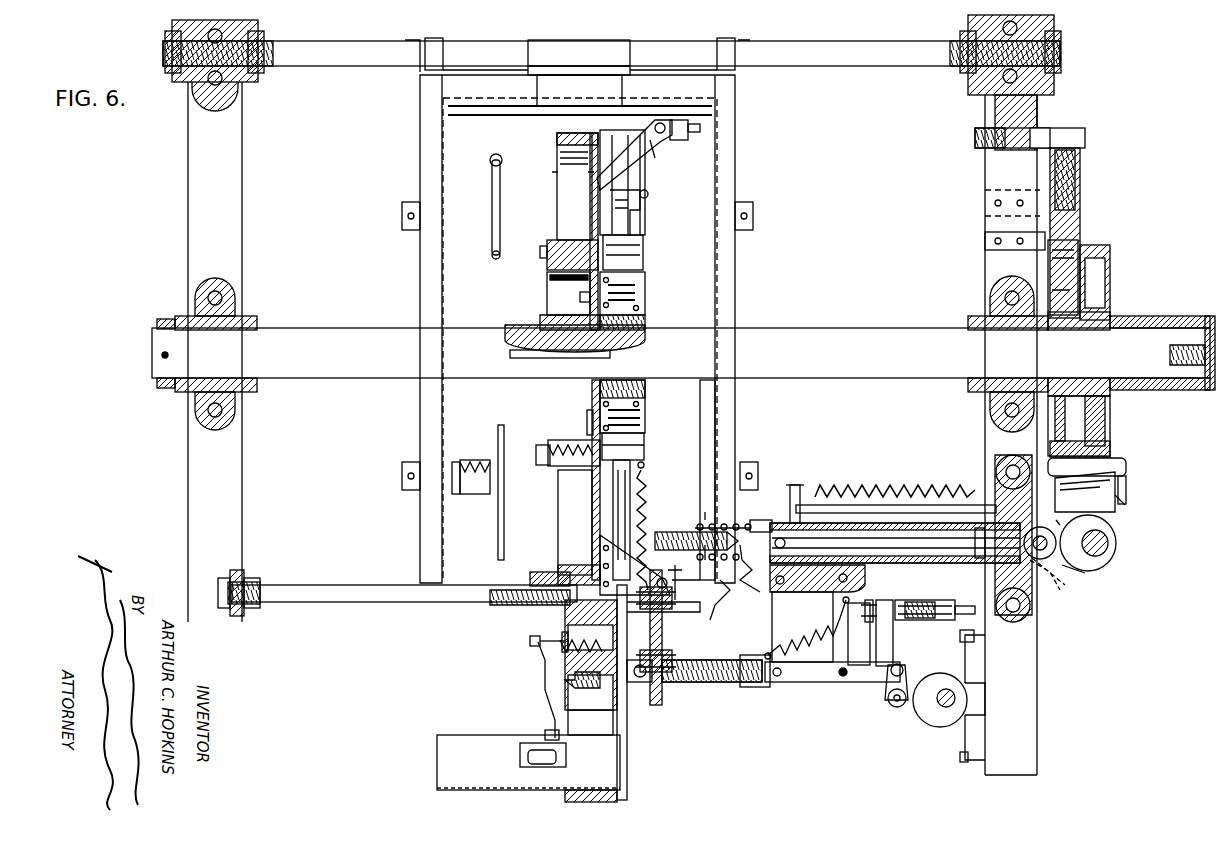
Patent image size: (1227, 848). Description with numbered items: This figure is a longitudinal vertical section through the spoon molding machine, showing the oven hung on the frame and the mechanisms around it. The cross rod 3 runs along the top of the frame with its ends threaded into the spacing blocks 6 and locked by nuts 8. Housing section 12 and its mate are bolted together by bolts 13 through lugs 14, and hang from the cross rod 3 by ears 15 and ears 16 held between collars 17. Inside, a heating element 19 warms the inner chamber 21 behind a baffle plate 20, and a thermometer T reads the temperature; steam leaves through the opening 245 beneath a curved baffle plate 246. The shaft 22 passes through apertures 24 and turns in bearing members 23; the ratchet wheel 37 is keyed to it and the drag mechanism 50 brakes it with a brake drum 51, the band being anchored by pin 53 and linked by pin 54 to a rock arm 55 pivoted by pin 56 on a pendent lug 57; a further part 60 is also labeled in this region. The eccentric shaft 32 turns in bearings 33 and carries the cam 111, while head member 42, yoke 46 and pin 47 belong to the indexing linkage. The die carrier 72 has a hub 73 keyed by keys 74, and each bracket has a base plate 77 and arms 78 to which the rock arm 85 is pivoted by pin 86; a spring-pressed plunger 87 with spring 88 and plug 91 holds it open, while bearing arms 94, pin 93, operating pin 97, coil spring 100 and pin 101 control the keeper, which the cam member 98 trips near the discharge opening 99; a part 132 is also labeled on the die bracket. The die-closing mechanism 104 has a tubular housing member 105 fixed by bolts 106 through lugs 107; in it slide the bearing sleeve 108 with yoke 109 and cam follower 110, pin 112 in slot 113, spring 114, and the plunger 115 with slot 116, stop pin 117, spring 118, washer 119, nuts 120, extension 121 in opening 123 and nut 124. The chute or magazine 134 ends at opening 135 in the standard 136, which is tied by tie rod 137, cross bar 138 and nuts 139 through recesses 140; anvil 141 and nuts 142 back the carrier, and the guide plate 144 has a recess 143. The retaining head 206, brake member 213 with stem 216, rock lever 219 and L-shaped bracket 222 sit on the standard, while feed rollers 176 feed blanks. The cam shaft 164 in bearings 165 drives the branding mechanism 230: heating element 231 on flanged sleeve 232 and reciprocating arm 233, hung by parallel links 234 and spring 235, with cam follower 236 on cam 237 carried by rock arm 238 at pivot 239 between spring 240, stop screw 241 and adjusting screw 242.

The cross rod 3 is at (333, 58).
The spacing block 6 is at (230, 88).
The nuts 8 is at (165, 40).
The housing section 12 is at (737, 296).
The bolts 13 is at (402, 224).
The lugs 14 is at (405, 212).
The ears 15 is at (424, 42).
The ears 16 is at (445, 50).
The collars 17 is at (410, 42).
The electrical heating element 19 is at (466, 462).
The baffle plate 20 is at (498, 522).
The inner chamber 21 is at (712, 412).
The shaft 22 is at (830, 345).
The bearing members 23 is at (255, 325).
The apertures 24 is at (420, 318).
The eccentric shaft 32 is at (1108, 560).
The bearings 33 is at (1060, 500).
The ratchet wheel 37 is at (1108, 272).
The head member 42 is at (1115, 508).
The yoke 46 is at (1118, 468).
The pin 47 is at (1126, 486).
The drag mechanism 50 is at (1075, 240).
The brake drum 51 is at (1050, 278).
The pin 53 is at (985, 246).
The pin 54 is at (1055, 234).
The rock arm 55 is at (1072, 172).
The pin 56 is at (1045, 135).
The pendent lug 57 is at (1000, 116).
The slide 60 is at (1040, 200).
The die carrier 72 is at (570, 195).
The hub 73 is at (532, 320).
The keys 74 is at (508, 357).
The base plate 77 is at (600, 247).
The arms 78 is at (640, 298).
The rock arm 85 is at (640, 185).
The pin 86 is at (640, 310).
The spring-pressed plunger 87 is at (630, 262).
The spring 88 is at (575, 445).
The plug 91 is at (540, 448).
The pin 93 is at (664, 118).
The bearing arms 94 is at (653, 150).
The operating pin 97 is at (683, 138).
The cam member 98 is at (700, 612).
The discharge opening 99 is at (655, 590).
The coil spring 100 is at (648, 474).
The pin 101 is at (672, 590).
The die-closing mechanism 104 is at (990, 466).
The tubular housing member 105 is at (890, 604).
The bolts 106 is at (1005, 458).
The lugs 107 is at (998, 462).
The bearing sleeve 108 is at (930, 604).
The yoke 109 is at (1060, 592).
The cam follower 110 is at (1060, 568).
The cam 111 is at (1118, 542).
The pin 112 is at (796, 485).
The elongated slot 113 is at (808, 520).
The spring 114 is at (898, 486).
The plunger 115 is at (770, 548).
The elongated slot 116 is at (786, 544).
The stop pin 117 is at (760, 520).
The spring 118 is at (744, 580).
The washer 119 is at (712, 515).
The nuts 120 is at (714, 526).
The extension 121 is at (665, 530).
The opening 123 is at (712, 515).
The nut 124 is at (724, 602).
The latch 132 is at (645, 200).
The chute or magazine 134 is at (437, 770).
The opening 135 is at (608, 735).
The standard 136 is at (530, 638).
The tie rod 137 is at (360, 603).
The cross bar 138 is at (252, 616).
The nuts 139 is at (232, 576).
The recesses 140 is at (422, 570).
The anvil 141 is at (536, 570).
The nuts 142 is at (520, 590).
The recess 143 is at (627, 778).
The guide plate 144 is at (625, 715).
The cam shaft 164 is at (958, 700).
The bearings 165 is at (960, 760).
The feed rollers 176 is at (522, 750).
The spoon blank retaining member or head 206 is at (590, 721).
The brake member 213 is at (560, 648).
The stem 216 is at (532, 642).
The rock lever 219 is at (548, 700).
The L-shaped bracket 222 is at (565, 683).
The branding or stamping mechanism 230 is at (760, 688).
The electric heating element 231 is at (660, 645).
The flanged sleeve 232 is at (692, 690).
The reciprocating arm 233 is at (810, 680).
The parallel links 234 is at (840, 650).
The spring 235 is at (790, 632).
The cam follower 236 is at (898, 708).
The cam 237 is at (932, 722).
The rock arm 238 is at (893, 642).
The pivotal connection 239 is at (886, 690).
The spring 240 is at (940, 608).
The stop screw 241 is at (874, 614).
The adjusting screw 242 is at (965, 620).
The opening 245 is at (537, 90).
The curved baffle plate 246 is at (576, 60).
The thermometer T is at (490, 240).